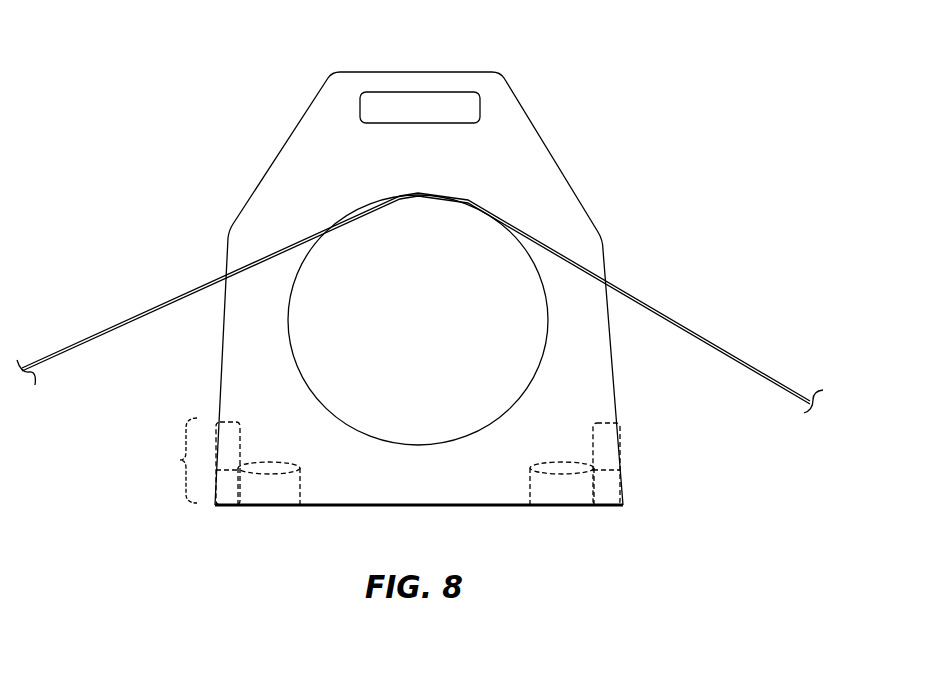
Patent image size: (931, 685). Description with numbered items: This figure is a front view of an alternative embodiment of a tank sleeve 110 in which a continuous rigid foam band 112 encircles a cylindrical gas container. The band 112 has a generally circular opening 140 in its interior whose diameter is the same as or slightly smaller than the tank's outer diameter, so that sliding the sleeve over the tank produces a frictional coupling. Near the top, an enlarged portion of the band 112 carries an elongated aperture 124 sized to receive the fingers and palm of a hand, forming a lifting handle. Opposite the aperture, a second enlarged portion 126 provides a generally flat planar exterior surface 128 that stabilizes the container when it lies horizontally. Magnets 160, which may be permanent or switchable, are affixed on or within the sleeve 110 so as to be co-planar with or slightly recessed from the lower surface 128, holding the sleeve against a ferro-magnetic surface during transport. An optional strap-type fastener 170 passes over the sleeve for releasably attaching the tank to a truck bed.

The tank sleeve 110 is at (606, 121).
The band 112 is at (575, 385).
The elongated aperture 124 is at (360, 93).
The second enlarged portion 126 is at (180, 460).
The planar exterior surface 128 is at (610, 505).
The circular opening 140 is at (290, 352).
The magnets 160 is at (555, 492).
The strap-type fastener 170 is at (645, 300).